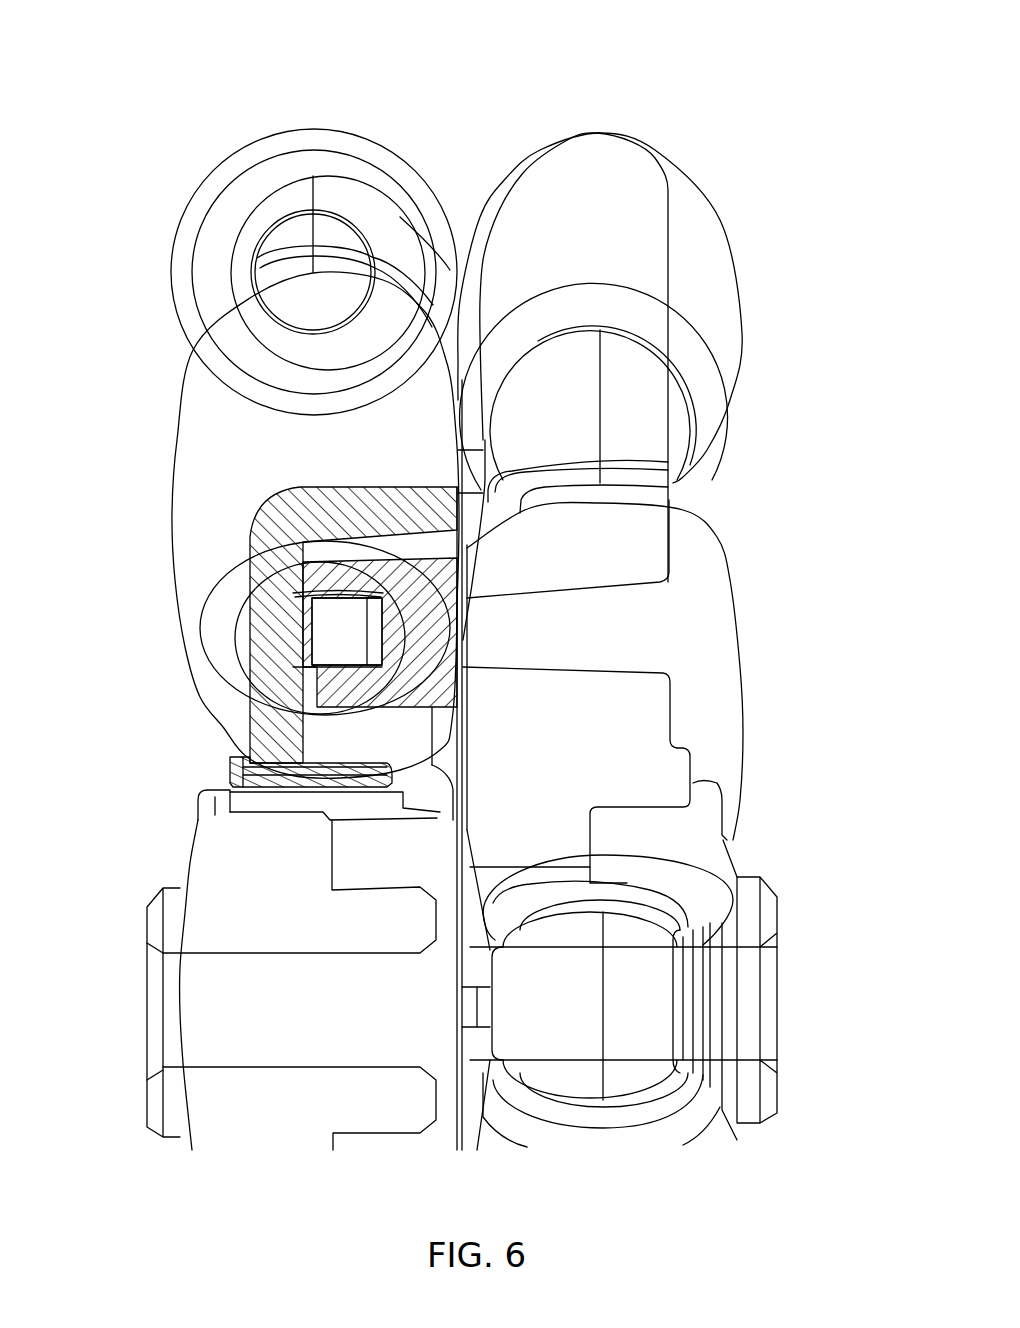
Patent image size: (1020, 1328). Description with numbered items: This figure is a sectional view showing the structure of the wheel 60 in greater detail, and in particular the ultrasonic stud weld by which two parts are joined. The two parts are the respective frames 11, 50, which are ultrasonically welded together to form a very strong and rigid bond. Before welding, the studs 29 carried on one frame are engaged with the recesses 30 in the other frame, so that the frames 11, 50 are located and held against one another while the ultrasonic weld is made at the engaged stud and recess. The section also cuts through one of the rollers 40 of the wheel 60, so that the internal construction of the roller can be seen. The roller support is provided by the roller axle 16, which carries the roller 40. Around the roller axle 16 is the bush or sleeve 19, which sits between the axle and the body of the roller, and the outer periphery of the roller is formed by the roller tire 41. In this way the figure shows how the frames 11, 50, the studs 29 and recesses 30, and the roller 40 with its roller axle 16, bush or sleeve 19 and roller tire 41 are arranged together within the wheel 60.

The frame 11 is at (288, 780).
The roller axle 16 is at (284, 292).
The bush or sleeve 19 is at (278, 327).
The stud 29 is at (335, 628).
The recess 30 is at (307, 694).
The roller 40 is at (200, 481).
The roller tire 41 is at (263, 178).
The frame 50 is at (637, 550).
The wheel 60 is at (647, 70).